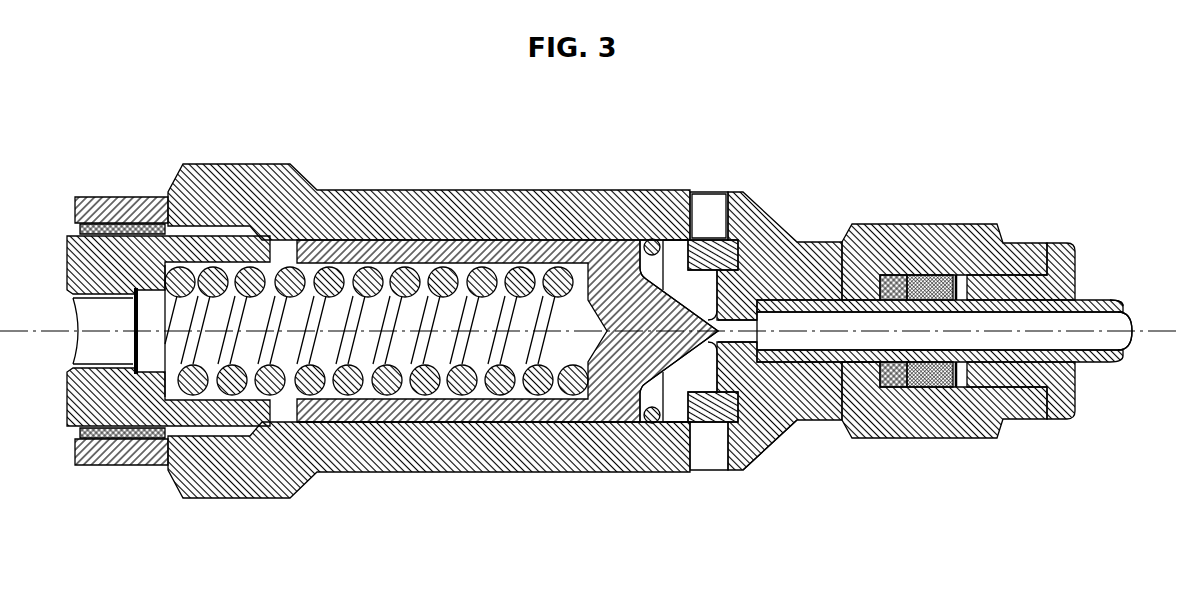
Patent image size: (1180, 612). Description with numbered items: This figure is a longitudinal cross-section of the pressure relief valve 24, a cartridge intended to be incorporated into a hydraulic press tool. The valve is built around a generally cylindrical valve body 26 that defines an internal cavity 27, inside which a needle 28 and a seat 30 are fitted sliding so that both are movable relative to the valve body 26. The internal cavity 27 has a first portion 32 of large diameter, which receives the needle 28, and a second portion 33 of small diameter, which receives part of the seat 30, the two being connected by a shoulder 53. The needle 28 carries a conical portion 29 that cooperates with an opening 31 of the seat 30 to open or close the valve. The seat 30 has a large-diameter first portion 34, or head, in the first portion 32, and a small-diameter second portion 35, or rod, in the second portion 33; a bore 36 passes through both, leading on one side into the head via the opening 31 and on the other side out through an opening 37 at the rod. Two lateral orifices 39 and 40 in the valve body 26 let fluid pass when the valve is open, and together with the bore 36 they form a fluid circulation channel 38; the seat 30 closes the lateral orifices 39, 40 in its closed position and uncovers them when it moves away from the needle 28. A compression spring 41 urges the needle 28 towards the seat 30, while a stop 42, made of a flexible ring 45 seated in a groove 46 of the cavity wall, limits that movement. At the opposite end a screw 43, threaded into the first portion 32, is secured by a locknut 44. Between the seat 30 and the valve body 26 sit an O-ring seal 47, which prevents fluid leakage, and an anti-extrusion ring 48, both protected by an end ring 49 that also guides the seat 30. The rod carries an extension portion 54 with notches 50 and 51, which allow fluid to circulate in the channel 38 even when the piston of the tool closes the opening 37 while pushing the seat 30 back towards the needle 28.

The pressure relief valve 24 is at (216, 113).
The valve body 26 is at (407, 210).
The internal cavity 27 is at (333, 233).
The needle 28 is at (455, 410).
The conical portion 29 is at (672, 407).
The seat 30 is at (820, 352).
The opening 31 is at (770, 420).
The first portion of the internal cavity 32 is at (335, 427).
The second portion of the internal cavity 33 is at (865, 360).
The first portion of the seat 34 is at (705, 213).
The second portion of the seat 35 is at (823, 308).
The bore 36 is at (907, 312).
The opening 37 is at (1110, 345).
The fluid circulation channel 38 is at (930, 345).
The lateral orifice 39 is at (712, 197).
The lateral orifice 40 is at (705, 447).
The compression spring 41 is at (258, 398).
The stop 42 is at (662, 405).
The screw 43 is at (118, 405).
The locknut 44 is at (100, 452).
The flexible ring 45 is at (660, 237).
The groove 46 is at (635, 227).
The O-ring seal 47 is at (937, 282).
The anti-extrusion ring 48 is at (870, 292).
The end ring 49 is at (1060, 262).
The notch 50 is at (1127, 308).
The notch 51 is at (1117, 350).
The shoulder 53 is at (737, 257).
The extension portion 54 is at (1102, 302).